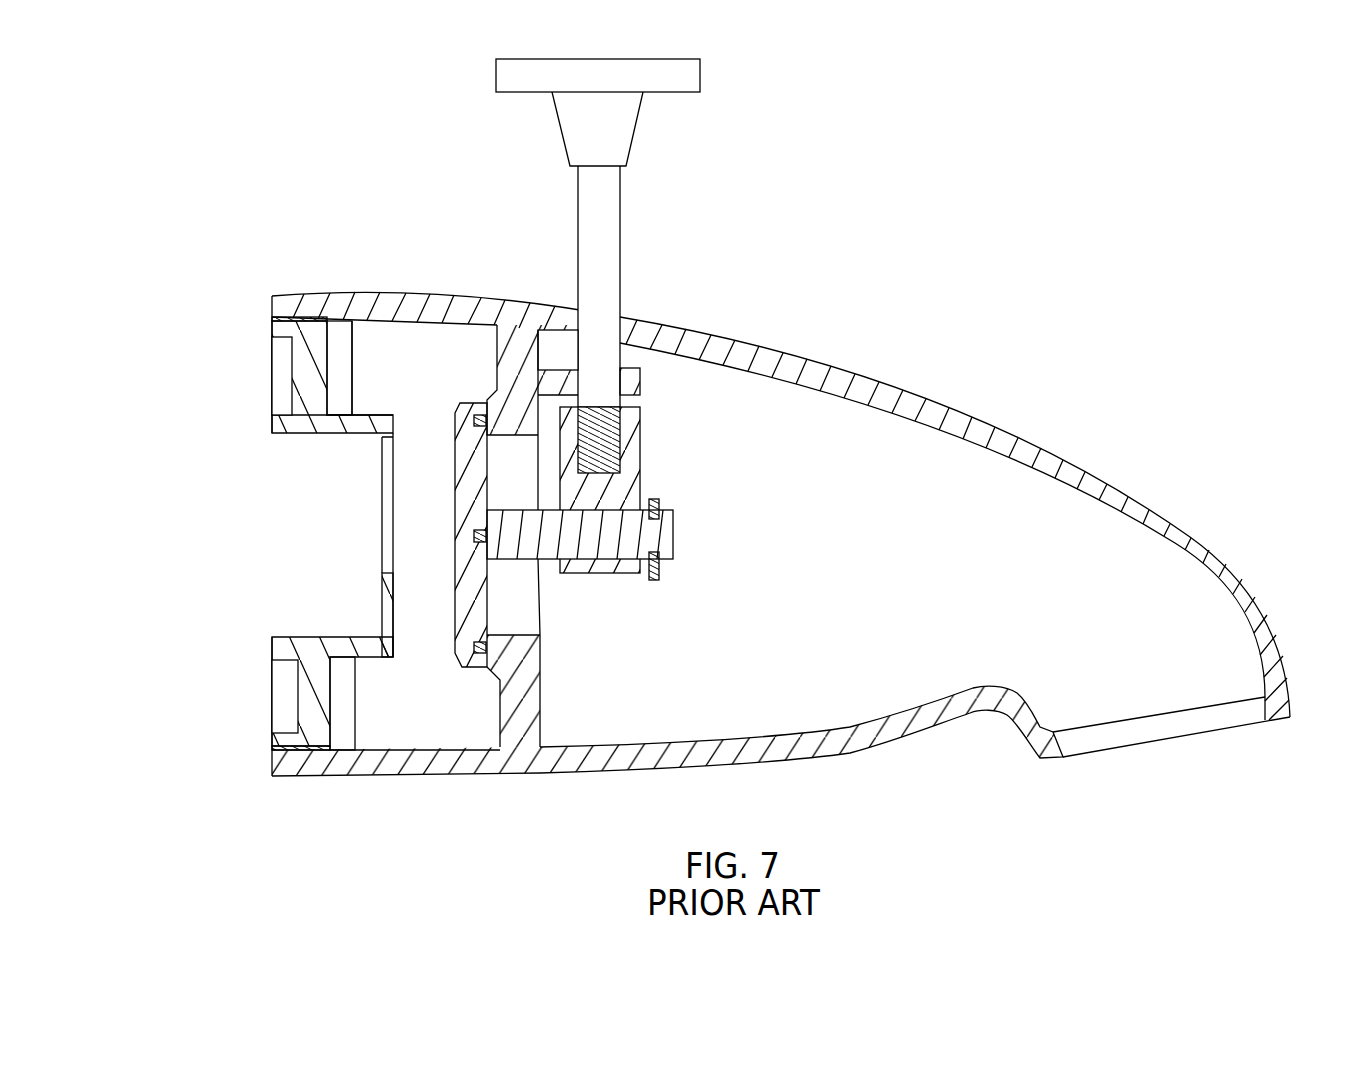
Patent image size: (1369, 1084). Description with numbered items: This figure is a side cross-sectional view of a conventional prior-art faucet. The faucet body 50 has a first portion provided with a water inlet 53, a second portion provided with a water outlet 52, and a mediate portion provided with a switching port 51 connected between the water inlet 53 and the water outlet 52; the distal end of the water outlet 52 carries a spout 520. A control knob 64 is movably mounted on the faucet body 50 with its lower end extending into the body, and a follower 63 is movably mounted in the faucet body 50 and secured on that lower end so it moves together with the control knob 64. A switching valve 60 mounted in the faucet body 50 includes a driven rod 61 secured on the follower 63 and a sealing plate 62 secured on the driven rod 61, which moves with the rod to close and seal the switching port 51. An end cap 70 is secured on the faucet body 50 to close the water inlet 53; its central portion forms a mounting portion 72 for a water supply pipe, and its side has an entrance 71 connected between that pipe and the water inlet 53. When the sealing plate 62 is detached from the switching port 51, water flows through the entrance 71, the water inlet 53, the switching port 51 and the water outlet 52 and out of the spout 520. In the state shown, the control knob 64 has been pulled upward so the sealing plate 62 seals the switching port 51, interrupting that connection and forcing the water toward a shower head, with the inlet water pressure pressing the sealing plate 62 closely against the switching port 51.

The faucet body 50 is at (950, 408).
The switching port 51 is at (513, 437).
The water outlet 52 is at (983, 503).
The water inlet 53 is at (433, 347).
The switching valve 60 is at (696, 558).
The driven rod 61 is at (620, 543).
The sealing plate 62 is at (464, 438).
The follower 63 is at (630, 447).
The control knob 64 is at (610, 242).
The end cap 70 is at (296, 675).
The entrance 71 is at (388, 498).
The mounting portion 72 is at (310, 437).
The spout 520 is at (1160, 727).